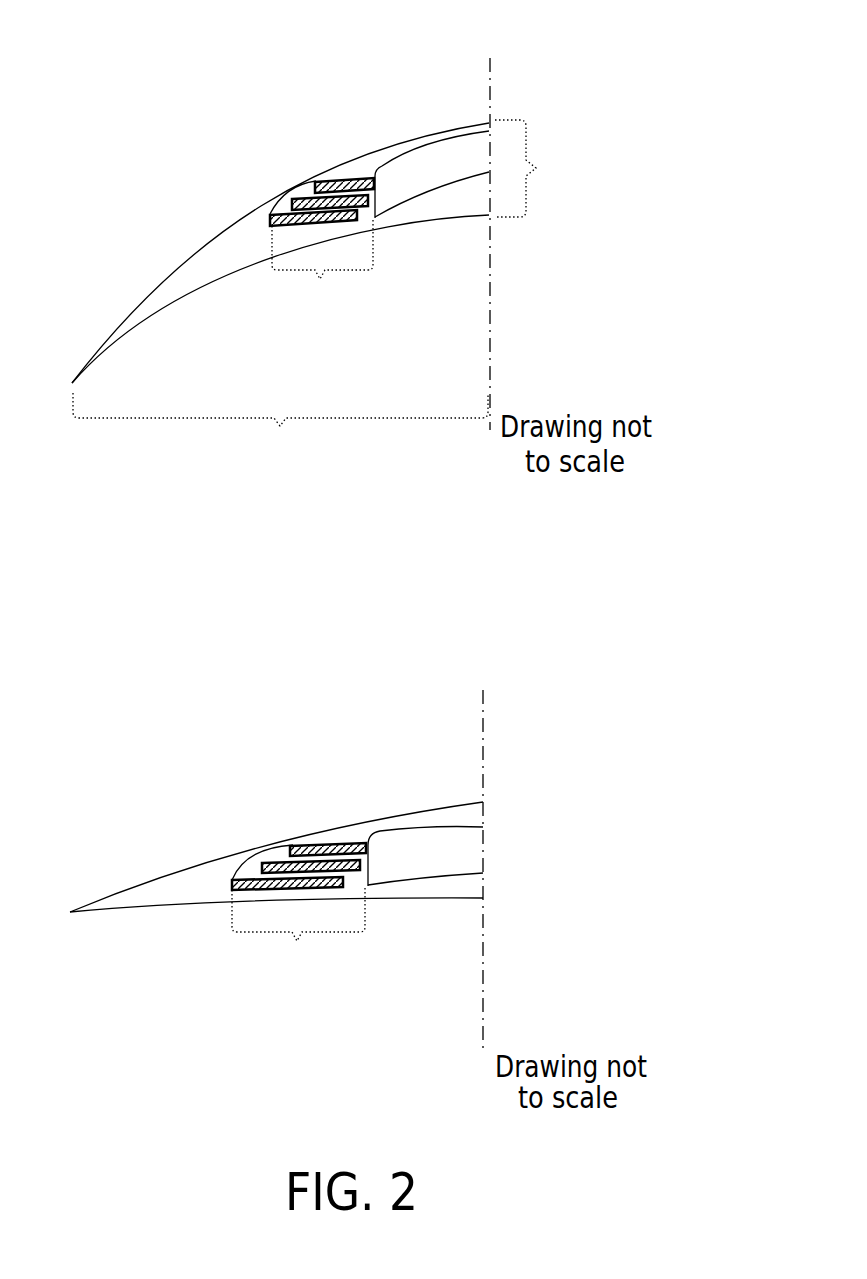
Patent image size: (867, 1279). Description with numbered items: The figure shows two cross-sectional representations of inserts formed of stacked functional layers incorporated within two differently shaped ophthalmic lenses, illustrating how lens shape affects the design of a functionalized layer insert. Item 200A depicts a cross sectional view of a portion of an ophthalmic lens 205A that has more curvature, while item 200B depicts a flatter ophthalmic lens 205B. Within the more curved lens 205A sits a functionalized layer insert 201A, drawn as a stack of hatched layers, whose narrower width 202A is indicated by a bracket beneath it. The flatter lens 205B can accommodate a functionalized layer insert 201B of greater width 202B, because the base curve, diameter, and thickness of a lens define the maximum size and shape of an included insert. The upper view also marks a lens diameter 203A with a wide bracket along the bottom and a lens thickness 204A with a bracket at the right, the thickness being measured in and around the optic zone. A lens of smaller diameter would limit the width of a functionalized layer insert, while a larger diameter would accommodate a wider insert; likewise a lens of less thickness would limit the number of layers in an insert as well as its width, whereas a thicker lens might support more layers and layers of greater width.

The cross sectional view of a portion of an ophthalmic lens with more curvature 200A is at (184, 198).
The functionalized layer insert 201A is at (337, 169).
The width of functionalized layer insert 202A is at (320, 299).
The lens diameter 203A is at (280, 442).
The lens thickness 204A is at (544, 163).
The ophthalmic lens 205A is at (443, 116).
The cross sectional view of a portion of a flatter ophthalmic lens 200B is at (190, 831).
The functionalized layer insert 201B is at (334, 832).
The width of functionalized layer insert 202B is at (290, 956).
The ophthalmic lens 205B is at (444, 789).